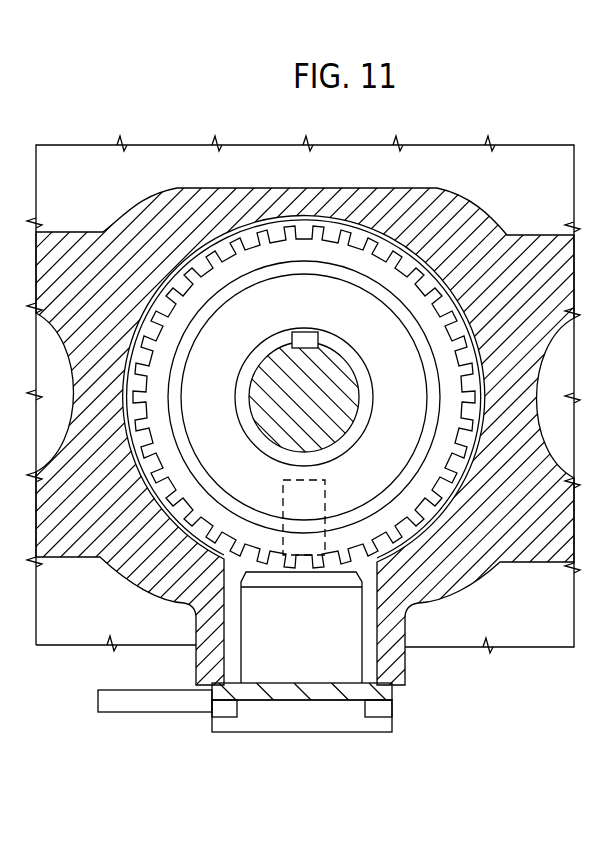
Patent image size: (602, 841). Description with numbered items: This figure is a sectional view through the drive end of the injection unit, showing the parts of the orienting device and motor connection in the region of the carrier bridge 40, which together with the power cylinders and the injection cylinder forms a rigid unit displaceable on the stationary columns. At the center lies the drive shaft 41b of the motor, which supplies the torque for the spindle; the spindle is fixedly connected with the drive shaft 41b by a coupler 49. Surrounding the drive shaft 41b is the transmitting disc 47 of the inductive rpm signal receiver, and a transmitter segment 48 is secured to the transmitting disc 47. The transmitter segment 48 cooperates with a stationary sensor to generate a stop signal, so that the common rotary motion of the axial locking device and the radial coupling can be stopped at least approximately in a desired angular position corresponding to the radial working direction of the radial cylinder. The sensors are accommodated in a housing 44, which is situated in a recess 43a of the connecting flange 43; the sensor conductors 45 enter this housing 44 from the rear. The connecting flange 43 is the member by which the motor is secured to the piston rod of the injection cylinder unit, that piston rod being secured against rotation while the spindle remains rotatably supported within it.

The carrier bridge 40 is at (512, 200).
The drive shaft 41b is at (320, 391).
The connecting flange 43 is at (478, 588).
The recess 43a is at (392, 667).
The housing 44 is at (305, 653).
The sensor conductors 45 is at (148, 707).
The transmitting disc 47 is at (275, 343).
The transmitter segment 48 is at (330, 480).
The coupler 49 is at (306, 332).